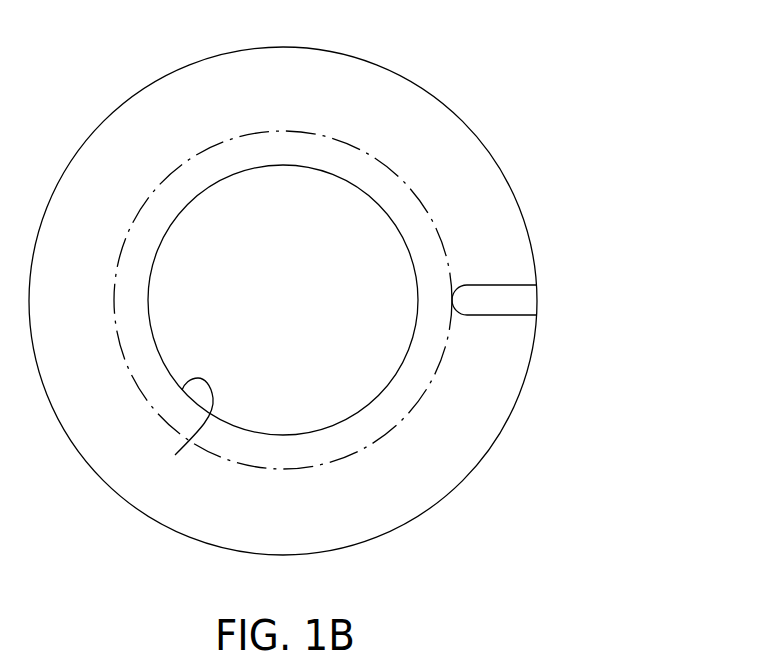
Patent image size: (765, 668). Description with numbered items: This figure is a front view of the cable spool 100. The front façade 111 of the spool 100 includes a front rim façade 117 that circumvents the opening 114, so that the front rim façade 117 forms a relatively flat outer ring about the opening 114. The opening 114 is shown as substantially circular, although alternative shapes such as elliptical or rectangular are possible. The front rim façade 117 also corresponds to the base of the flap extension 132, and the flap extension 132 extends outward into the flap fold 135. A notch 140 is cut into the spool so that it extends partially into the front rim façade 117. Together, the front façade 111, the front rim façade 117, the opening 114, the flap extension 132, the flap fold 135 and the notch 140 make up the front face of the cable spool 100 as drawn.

The cable spool 100 is at (333, 286).
The front façade 111 is at (450, 220).
The front rim façade 117 is at (372, 172).
The opening 114 is at (175, 455).
The flap fold 135 is at (522, 395).
The flap extension 132 is at (333, 301).
The notch 140 is at (518, 287).